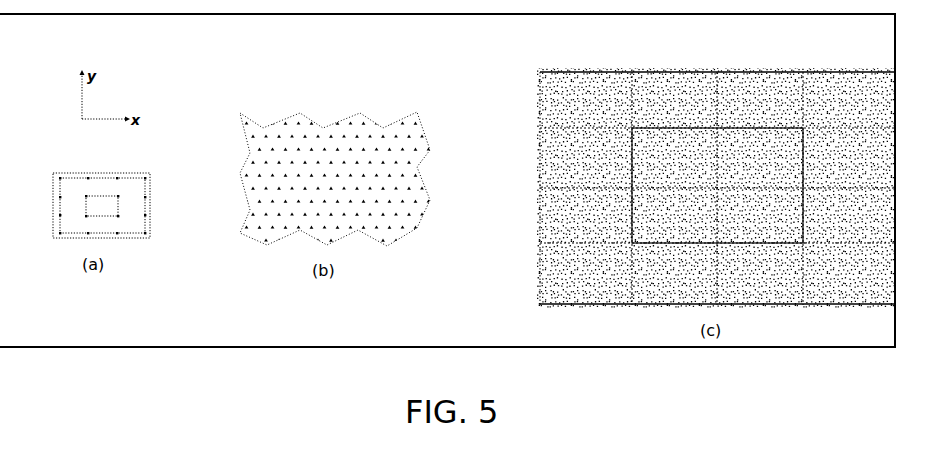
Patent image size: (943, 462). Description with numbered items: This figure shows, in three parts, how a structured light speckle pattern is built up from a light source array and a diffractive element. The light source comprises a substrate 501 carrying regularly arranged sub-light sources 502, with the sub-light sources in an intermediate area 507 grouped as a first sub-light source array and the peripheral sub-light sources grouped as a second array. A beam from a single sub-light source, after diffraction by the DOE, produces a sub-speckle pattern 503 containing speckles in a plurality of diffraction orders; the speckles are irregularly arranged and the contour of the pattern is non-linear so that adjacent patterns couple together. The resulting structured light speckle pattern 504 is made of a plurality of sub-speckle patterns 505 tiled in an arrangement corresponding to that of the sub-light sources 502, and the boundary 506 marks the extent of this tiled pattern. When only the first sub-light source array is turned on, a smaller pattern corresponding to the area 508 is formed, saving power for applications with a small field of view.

The substrate 501 is at (62, 173).
The sub-light sources 502 is at (118, 195).
The intermediate area 507 is at (86, 197).
The sub-speckle pattern 503 is at (280, 114).
The structured light speckle pattern 504 is at (658, 66).
The sub-speckle patterns 505 is at (540, 107).
The top boundary line 506 is at (765, 69).
The area 508 is at (627, 217).